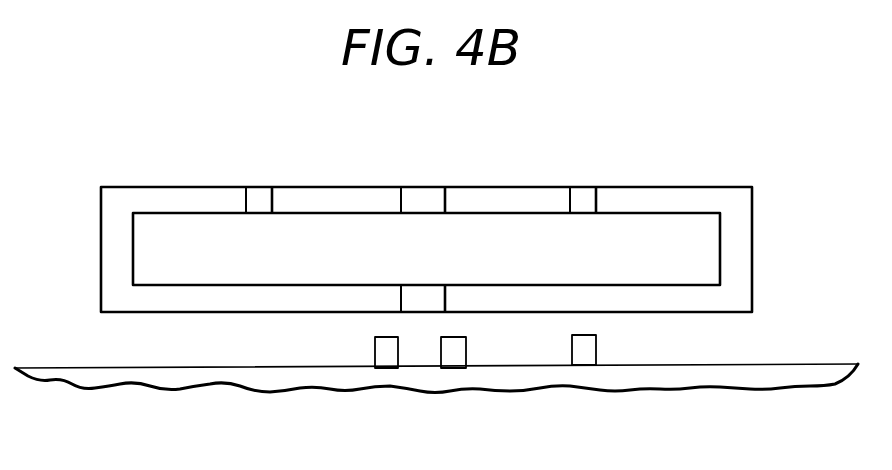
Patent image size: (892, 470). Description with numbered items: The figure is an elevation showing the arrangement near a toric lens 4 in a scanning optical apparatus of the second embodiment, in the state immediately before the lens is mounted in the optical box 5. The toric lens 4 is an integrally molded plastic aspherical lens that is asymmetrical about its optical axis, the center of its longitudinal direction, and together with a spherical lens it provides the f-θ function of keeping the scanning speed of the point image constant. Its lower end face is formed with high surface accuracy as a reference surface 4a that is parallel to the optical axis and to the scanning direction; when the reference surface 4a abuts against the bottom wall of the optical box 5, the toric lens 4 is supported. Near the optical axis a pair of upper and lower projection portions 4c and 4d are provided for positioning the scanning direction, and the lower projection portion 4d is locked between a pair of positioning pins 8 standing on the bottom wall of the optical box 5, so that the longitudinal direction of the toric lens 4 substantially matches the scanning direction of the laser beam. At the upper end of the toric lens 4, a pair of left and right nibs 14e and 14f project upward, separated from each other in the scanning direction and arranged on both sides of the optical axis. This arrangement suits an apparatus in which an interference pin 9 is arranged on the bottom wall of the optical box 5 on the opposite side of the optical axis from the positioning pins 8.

The toric lens 4 is at (770, 180).
The reference surface 4a is at (246, 313).
The upper projection portion 4c is at (421, 195).
The lower projection portion 4d is at (425, 296).
The nib 14f is at (259, 195).
The nib 14e is at (581, 193).
The optical box 5 is at (121, 378).
The positioning pins 8 is at (454, 355).
The interference pin 9 is at (582, 355).